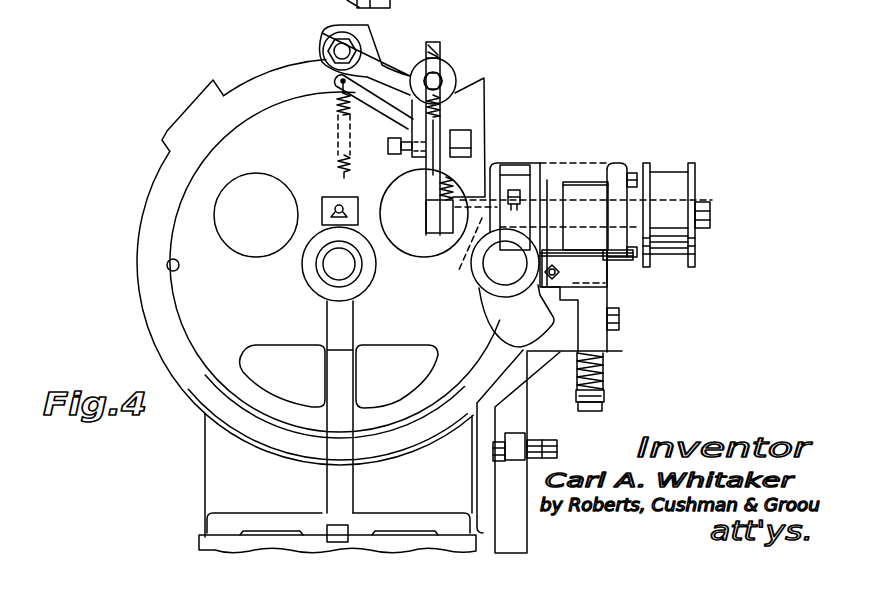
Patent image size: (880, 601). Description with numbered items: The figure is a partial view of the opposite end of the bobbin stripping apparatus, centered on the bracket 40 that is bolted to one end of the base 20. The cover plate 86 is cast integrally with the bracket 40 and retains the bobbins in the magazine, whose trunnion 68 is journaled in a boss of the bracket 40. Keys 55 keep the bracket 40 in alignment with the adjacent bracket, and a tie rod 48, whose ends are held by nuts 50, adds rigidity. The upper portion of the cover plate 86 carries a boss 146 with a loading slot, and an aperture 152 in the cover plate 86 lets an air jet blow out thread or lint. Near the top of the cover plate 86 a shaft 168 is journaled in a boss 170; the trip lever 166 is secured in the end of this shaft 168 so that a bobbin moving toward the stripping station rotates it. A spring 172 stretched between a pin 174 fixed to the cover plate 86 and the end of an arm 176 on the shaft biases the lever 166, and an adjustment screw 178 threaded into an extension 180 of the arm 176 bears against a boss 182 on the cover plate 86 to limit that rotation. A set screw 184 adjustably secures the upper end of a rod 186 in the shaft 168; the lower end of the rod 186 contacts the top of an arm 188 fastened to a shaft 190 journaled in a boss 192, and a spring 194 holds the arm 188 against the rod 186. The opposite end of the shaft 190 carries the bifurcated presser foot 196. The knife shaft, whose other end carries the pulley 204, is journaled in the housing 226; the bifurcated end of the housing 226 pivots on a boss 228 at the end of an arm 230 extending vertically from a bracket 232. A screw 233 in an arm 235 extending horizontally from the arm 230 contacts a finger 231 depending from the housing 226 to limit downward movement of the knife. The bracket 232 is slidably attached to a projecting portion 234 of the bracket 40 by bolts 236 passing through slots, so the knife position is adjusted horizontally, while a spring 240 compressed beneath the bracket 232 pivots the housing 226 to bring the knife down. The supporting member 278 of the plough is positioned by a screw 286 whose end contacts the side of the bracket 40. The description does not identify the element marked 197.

The base 20 is at (200, 537).
The bracket 40 is at (203, 460).
The tie rod 48 is at (321, 49).
The nuts 50 is at (297, 62).
The keys 55 is at (327, 527).
The trunnion 68 is at (333, 266).
The cover plate 86 is at (157, 303).
The boss 146 is at (155, 136).
The aperture 152 is at (167, 267).
The trip lever 166 is at (440, 43).
The shaft 168 is at (447, 78).
The boss 170 is at (376, 53).
The spring 172 is at (337, 120).
The pin 174 is at (337, 160).
The arm 176 is at (387, 103).
The adjustment screw 178 is at (388, 143).
The extension 180 is at (368, 196).
The boss 182 is at (466, 140).
The set screw 184 is at (475, 80).
The rod 186 is at (440, 212).
The arm 188 is at (452, 240).
The shaft 190 is at (478, 278).
The boss 192 is at (470, 190).
The spring 194 is at (460, 97).
The bifurcated presser foot 196 is at (540, 165).
The slide block 197 is at (517, 175).
The pulley 204 is at (680, 197).
The housing 226 is at (608, 157).
The boss 228 is at (597, 212).
The arm 230 is at (593, 253).
The finger 231 is at (560, 268).
The bracket 232 is at (622, 352).
The screw 233 is at (490, 300).
The projecting portion 234 is at (547, 352).
The arm 235 is at (550, 305).
The bolts 236 is at (622, 320).
The spring 240 is at (606, 392).
The supporting member 278 is at (575, 440).
The screw 286 is at (490, 476).